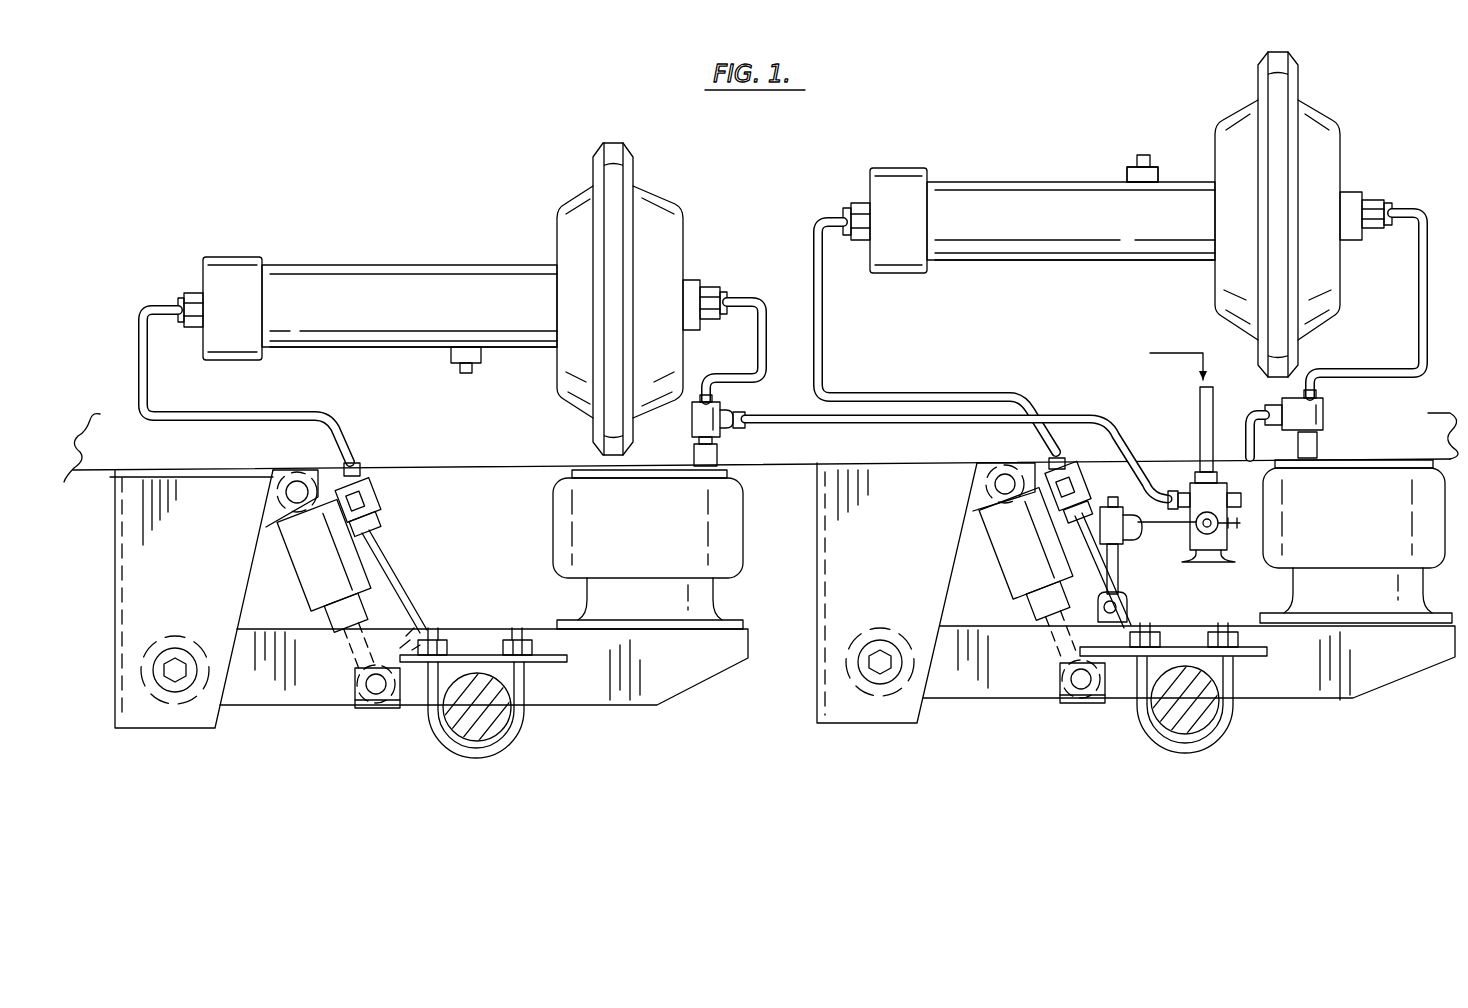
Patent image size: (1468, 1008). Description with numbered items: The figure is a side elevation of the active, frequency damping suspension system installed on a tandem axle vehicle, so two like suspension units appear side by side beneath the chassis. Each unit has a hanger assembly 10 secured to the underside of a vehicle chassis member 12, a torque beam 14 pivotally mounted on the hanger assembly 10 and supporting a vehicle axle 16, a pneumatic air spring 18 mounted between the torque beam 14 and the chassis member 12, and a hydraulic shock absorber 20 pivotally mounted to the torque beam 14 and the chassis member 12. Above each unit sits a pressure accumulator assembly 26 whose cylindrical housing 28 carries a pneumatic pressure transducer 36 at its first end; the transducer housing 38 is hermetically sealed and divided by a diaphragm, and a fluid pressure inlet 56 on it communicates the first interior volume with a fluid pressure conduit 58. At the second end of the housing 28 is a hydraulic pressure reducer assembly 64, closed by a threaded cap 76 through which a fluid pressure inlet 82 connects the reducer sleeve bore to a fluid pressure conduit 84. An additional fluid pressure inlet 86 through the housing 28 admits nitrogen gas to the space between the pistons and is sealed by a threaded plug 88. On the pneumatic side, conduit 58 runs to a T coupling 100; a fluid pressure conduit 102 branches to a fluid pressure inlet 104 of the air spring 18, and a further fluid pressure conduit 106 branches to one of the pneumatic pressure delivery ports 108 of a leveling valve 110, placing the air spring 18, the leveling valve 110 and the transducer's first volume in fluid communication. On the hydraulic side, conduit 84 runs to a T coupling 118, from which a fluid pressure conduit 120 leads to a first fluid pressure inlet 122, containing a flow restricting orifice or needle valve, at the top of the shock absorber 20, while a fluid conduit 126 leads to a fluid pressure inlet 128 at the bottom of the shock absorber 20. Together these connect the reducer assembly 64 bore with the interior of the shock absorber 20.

The hanger assembly 10 is at (140, 586).
The vehicle chassis member 12 is at (92, 480).
The torque beam 14 is at (262, 704).
The vehicle axle 16 is at (440, 742).
The pneumatic air spring 18 is at (732, 526).
The hydraulic shock absorber 20 is at (292, 568).
The pressure accumulator assembly 26 is at (356, 214).
The cylindrical housing 28 is at (418, 265).
The pneumatic pressure transducer 36 is at (668, 186).
The transducer housing 38 is at (684, 228).
The fluid pressure inlet 56 is at (707, 281).
The fluid pressure conduit 58 is at (752, 300).
The hydraulic pressure reducer assembly 64 is at (286, 352).
The threaded cap 76 is at (232, 257).
The fluid pressure inlet 82 is at (190, 292).
The fluid pressure conduit 84 is at (138, 350).
The fluid pressure inlet 86 is at (448, 364).
The threaded plug 88 is at (468, 376).
The T coupling 100 is at (726, 418).
The fluid pressure conduit 102 is at (699, 441).
The fluid pressure inlet 104 is at (720, 454).
The fluid pressure conduit 106 is at (858, 424).
The pneumatic pressure delivery port 108 is at (1188, 474).
The leveling valve 110 is at (1213, 562).
The T coupling 118 is at (384, 502).
The fluid pressure conduit 120 is at (384, 528).
The first fluid pressure inlet 122 is at (358, 466).
The fluid conduit 126 is at (408, 584).
The fluid pressure inlet 128 is at (424, 630).